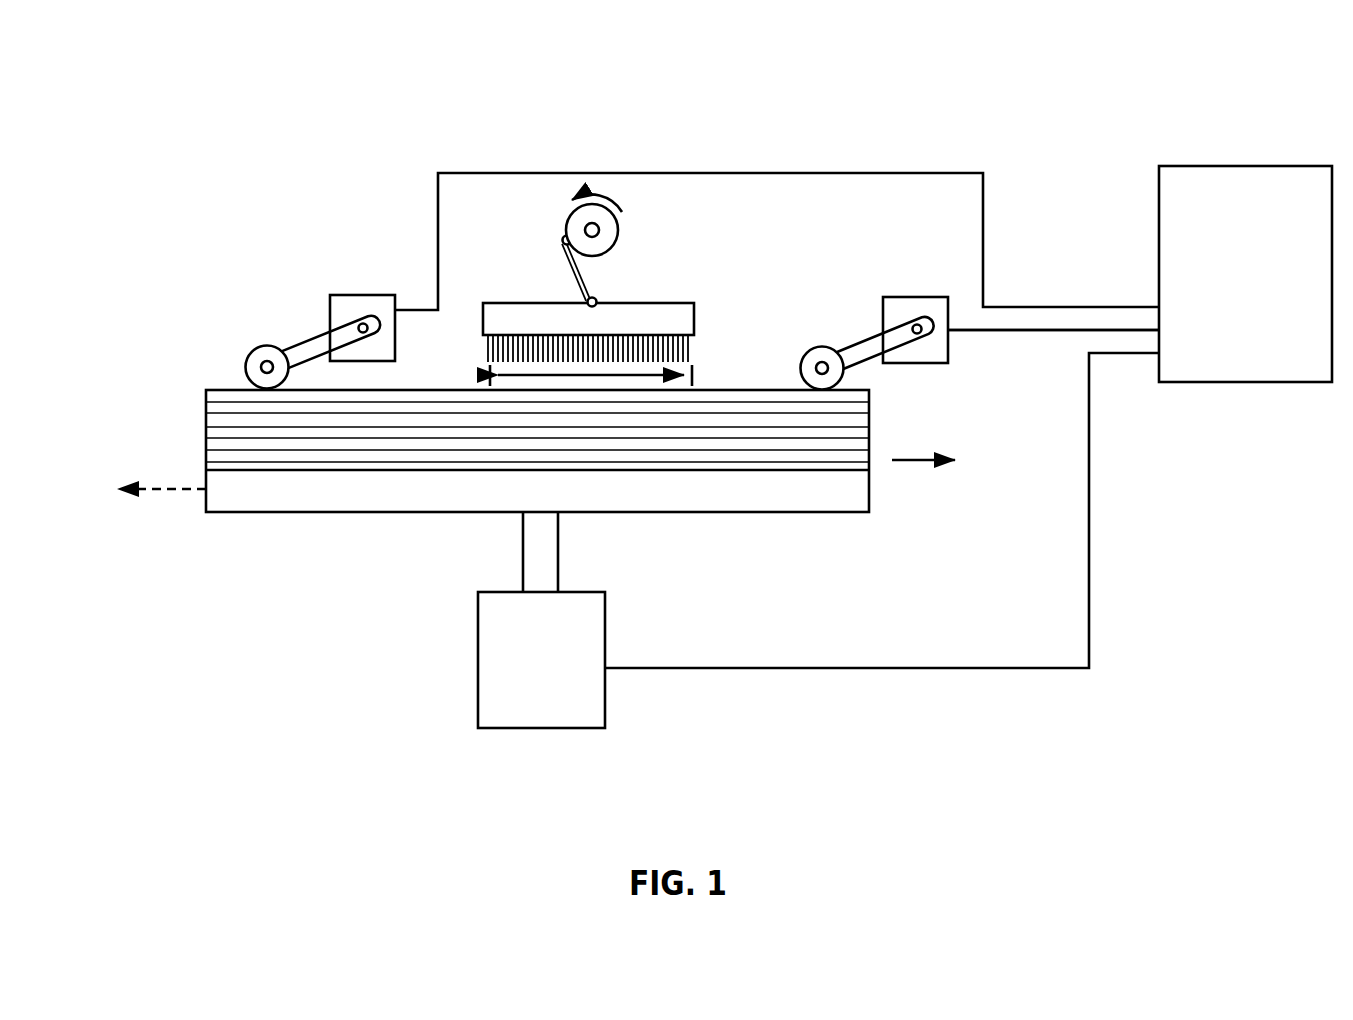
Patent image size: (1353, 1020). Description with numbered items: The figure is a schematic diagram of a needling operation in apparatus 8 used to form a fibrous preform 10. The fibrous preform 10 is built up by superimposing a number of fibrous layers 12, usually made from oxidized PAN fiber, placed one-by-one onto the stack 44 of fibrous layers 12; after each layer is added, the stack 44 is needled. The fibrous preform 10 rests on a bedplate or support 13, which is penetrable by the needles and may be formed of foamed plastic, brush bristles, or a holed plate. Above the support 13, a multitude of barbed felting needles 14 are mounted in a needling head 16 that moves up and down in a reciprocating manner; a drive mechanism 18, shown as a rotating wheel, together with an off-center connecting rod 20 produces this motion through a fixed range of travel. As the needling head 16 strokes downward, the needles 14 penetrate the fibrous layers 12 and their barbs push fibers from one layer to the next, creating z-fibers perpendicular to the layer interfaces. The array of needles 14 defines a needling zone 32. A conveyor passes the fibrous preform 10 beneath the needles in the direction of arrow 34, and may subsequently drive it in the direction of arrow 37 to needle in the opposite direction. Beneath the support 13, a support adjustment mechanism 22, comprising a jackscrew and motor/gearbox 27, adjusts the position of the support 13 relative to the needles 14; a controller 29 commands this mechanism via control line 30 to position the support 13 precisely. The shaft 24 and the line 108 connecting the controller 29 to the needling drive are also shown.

The apparatus 8 is at (565, 120).
The fibrous preform 10 is at (200, 416).
The fibrous layers 12 is at (204, 436).
The support 13 is at (287, 513).
The felting needles 14 is at (697, 340).
The needling head 16 is at (508, 303).
The drive mechanism 18 is at (618, 228).
The connecting rod 20 is at (590, 285).
The support adjustment mechanism 22 is at (470, 636).
The shaft 24 is at (558, 537).
The jackscrew and motor/gearbox 27 is at (606, 700).
The controller 29 is at (1250, 165).
The control line 30 is at (1089, 575).
The needling zone 32 is at (660, 373).
The arrow 34 is at (913, 460).
The arrow 37 is at (162, 494).
The stack 44 is at (222, 389).
The connection line 108 is at (1030, 333).